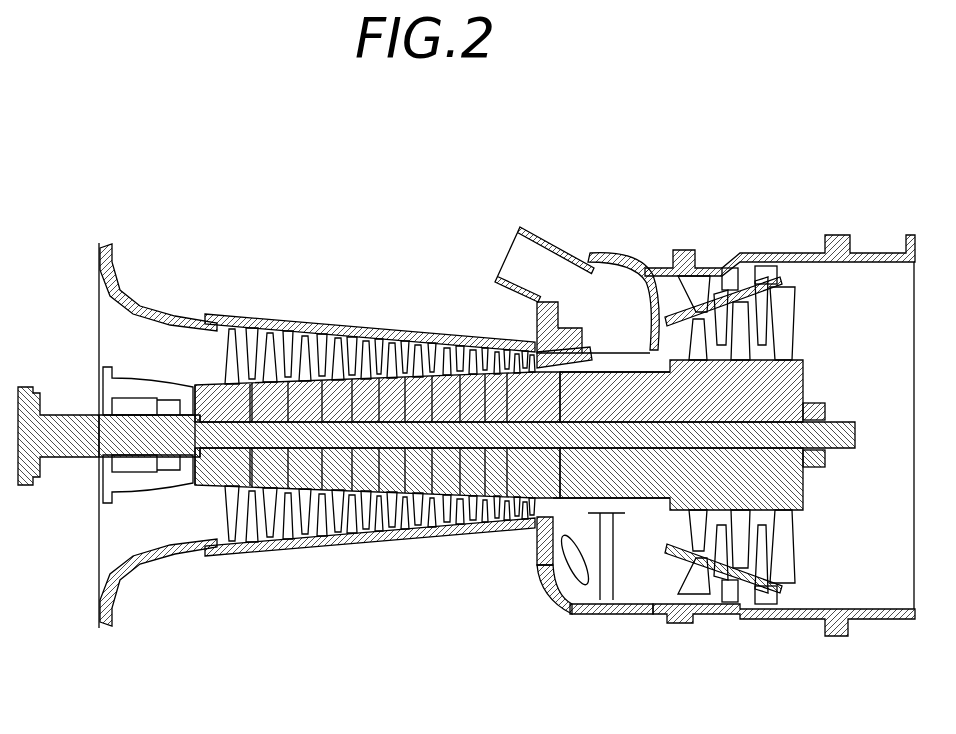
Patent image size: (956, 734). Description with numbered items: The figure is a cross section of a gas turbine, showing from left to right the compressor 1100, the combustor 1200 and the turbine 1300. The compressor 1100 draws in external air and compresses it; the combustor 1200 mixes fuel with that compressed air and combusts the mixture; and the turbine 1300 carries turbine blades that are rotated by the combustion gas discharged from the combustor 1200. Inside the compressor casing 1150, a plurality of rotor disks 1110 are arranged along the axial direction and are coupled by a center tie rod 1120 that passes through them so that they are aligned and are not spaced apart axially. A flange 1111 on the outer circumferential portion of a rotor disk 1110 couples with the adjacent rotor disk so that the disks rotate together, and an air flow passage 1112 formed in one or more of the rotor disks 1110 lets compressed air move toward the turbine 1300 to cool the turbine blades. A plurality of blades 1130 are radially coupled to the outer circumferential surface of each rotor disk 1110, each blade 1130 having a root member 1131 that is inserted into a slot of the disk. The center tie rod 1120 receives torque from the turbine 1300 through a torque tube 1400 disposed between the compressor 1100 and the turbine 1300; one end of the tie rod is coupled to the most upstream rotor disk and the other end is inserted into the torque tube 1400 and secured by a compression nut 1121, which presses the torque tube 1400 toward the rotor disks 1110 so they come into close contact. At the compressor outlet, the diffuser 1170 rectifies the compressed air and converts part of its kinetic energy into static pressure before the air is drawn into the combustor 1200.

The compressor 1100 is at (329, 449).
The rotor disks 1110 is at (248, 345).
The flange 1111 is at (232, 340).
The air flow passage 1112 is at (262, 472).
The center tie rod 1120 is at (425, 530).
The compression nut 1121 is at (578, 510).
The blades 1130 is at (258, 338).
The root member 1131 is at (282, 340).
The compressor casing 1150 is at (392, 338).
The diffuser 1170 is at (573, 350).
The combustor 1200 is at (538, 205).
The turbine 1300 is at (708, 521).
The torque tube 1400 is at (598, 505).